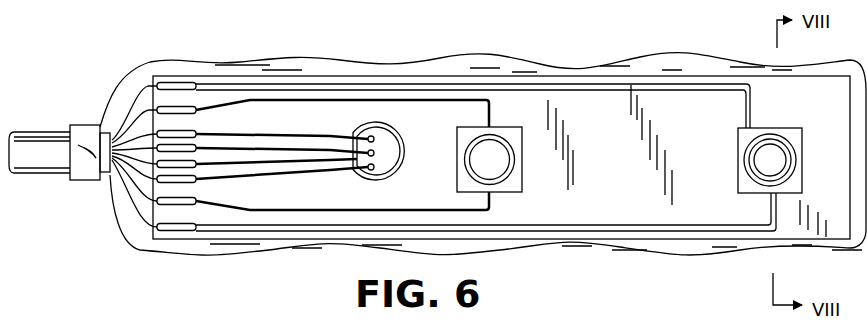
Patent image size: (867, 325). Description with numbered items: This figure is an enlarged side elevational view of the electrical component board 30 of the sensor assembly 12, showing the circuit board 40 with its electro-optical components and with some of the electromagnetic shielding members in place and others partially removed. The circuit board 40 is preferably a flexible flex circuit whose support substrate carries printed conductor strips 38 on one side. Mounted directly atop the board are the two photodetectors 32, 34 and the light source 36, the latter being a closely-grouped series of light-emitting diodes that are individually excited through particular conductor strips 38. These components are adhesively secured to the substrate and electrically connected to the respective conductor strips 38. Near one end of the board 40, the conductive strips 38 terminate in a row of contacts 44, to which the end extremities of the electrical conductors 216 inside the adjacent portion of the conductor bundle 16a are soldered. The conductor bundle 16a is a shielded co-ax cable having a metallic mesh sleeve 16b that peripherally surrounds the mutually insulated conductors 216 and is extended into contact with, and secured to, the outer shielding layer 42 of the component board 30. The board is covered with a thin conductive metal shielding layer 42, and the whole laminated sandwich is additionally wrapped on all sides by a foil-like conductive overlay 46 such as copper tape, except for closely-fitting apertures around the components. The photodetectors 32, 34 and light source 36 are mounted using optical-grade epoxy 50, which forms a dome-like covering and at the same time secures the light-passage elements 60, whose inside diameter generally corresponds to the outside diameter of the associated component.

The sensor assembly 12 is at (280, 263).
The conductor bundle 16a is at (50, 134).
The metallic mesh sleeve 16b is at (108, 180).
The electrical conductors 216 is at (128, 121).
The electrical component board 30 is at (553, 71).
The photodetector 32 is at (732, 165).
The photodetector 34 is at (452, 146).
The light source 36 is at (394, 178).
The printed conductor strips 38 is at (262, 109).
The printed circuit board 40 is at (598, 106).
The conductive metal shielding layer 42 is at (783, 240).
The contacts 44 is at (173, 82).
The conductive sheet overlay 46 is at (88, 178).
The optical-grade epoxy 50 is at (392, 157).
The light-passage element 60 is at (367, 175).